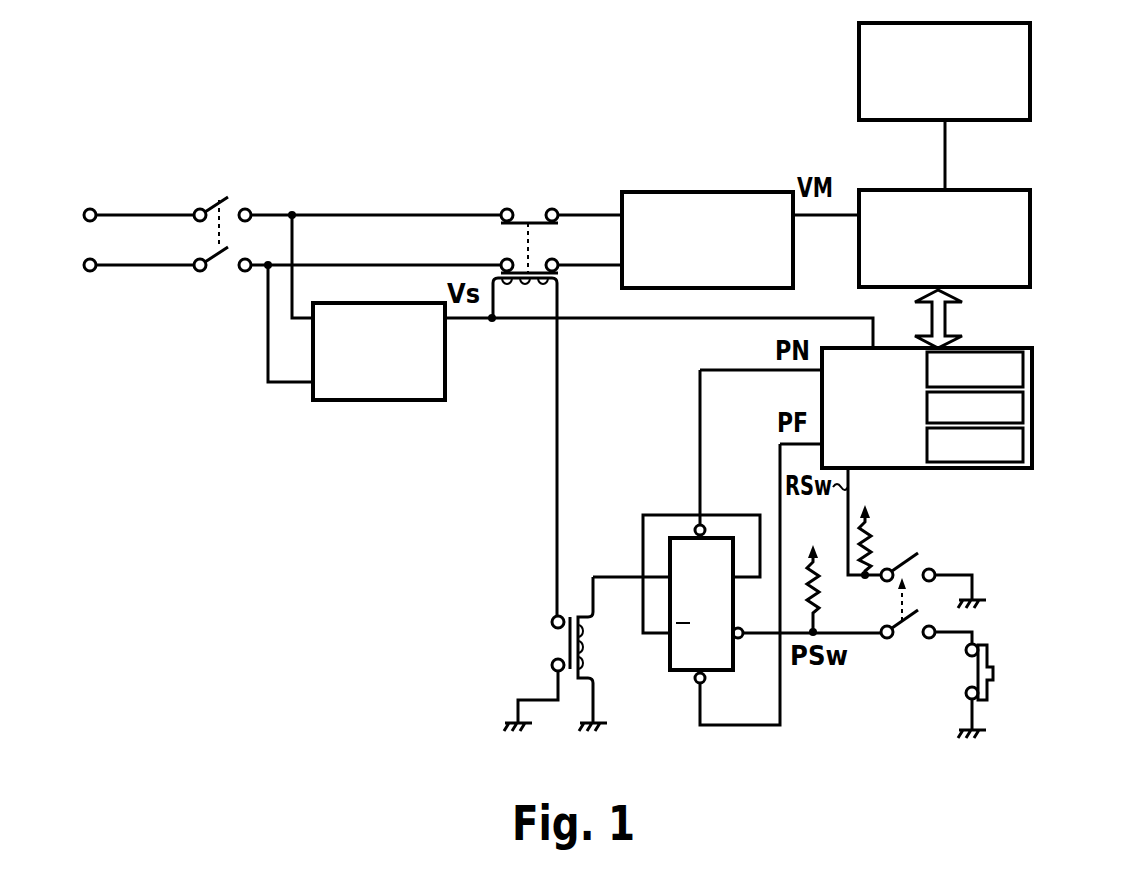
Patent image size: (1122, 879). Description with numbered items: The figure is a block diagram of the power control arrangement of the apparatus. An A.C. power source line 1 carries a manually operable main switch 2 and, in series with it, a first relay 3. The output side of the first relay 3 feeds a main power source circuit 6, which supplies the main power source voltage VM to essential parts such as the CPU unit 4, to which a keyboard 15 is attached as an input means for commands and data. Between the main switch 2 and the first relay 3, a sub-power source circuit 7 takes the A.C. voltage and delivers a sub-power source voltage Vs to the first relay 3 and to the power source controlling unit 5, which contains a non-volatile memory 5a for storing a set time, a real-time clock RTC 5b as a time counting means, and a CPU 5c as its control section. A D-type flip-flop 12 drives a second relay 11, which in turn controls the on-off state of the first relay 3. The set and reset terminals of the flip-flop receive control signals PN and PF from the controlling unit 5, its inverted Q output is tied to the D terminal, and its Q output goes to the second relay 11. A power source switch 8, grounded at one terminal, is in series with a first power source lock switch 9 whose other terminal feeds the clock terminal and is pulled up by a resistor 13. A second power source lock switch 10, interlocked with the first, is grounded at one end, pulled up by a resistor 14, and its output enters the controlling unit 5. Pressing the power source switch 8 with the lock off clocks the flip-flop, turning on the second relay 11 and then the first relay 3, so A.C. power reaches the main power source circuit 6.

The A.C. power source line 1 is at (142, 265).
The main switch 2 is at (229, 247).
The first relay 3 is at (521, 215).
The CPU unit 4 is at (993, 192).
The power source controlling unit 5 is at (960, 384).
The non-volatile memory 5a is at (1032, 375).
The real-time clock RTC 5b is at (1032, 408).
The CPU 5c is at (1032, 445).
The main power source circuit 6 is at (743, 192).
The sub-power source circuit 7 is at (447, 372).
The power source switch 8 is at (993, 677).
The first power source lock switch 9 is at (898, 640).
The second power source lock switch 10 is at (907, 557).
The second relay 11 is at (562, 638).
The D-type flip-flop 12 is at (685, 666).
The resistor 13 is at (818, 598).
The resistor 14 is at (876, 532).
The keyboard 15 is at (1030, 70).